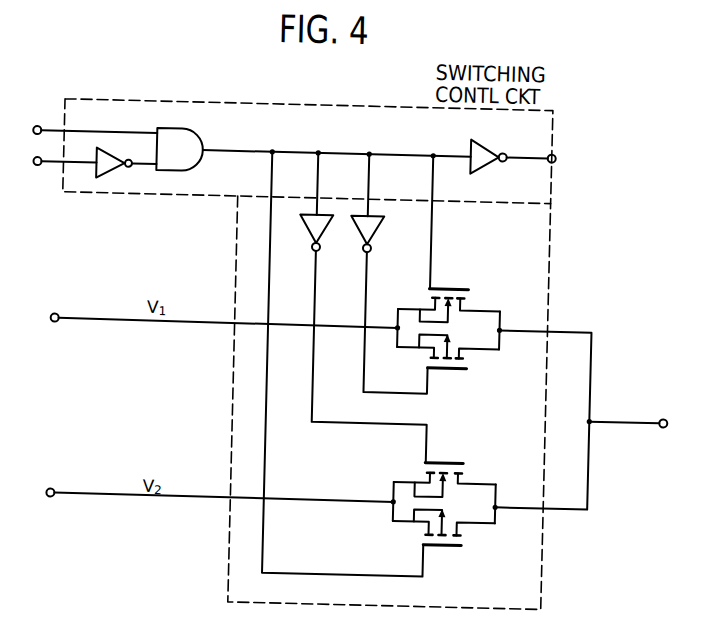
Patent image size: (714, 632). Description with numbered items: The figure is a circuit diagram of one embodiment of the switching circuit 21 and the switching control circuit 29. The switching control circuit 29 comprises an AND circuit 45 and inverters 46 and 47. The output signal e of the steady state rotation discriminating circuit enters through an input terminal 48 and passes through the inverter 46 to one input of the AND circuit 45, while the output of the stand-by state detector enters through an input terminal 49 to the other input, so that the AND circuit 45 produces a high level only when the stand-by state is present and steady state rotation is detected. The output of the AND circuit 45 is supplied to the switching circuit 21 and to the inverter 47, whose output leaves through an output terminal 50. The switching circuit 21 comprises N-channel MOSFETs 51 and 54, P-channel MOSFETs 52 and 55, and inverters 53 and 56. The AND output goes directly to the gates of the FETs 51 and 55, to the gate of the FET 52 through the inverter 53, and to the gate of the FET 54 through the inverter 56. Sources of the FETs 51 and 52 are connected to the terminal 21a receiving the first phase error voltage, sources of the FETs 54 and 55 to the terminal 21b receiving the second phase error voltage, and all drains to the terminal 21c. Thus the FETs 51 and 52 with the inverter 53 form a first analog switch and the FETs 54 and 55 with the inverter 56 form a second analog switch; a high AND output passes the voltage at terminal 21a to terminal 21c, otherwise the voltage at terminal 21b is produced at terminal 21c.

The switching control circuit 29 is at (148, 106).
The switching circuit 21 is at (551, 264).
The terminal 21a is at (56, 322).
The terminal 21b is at (56, 497).
The terminal 21c is at (662, 412).
The AND circuit 45 is at (195, 144).
The inverter 46 is at (108, 185).
The inverter 47 is at (480, 147).
The input terminal 48 is at (32, 174).
The input terminal 49 is at (31, 135).
The output terminal 50 is at (551, 156).
The N-channel MOSFET 51 is at (468, 288).
The P-channel MOSFET 52 is at (469, 367).
The inverter 53 is at (381, 232).
The N-channel MOSFET 54 is at (452, 461).
The P-channel MOSFET 55 is at (470, 545).
The inverter 56 is at (302, 236).